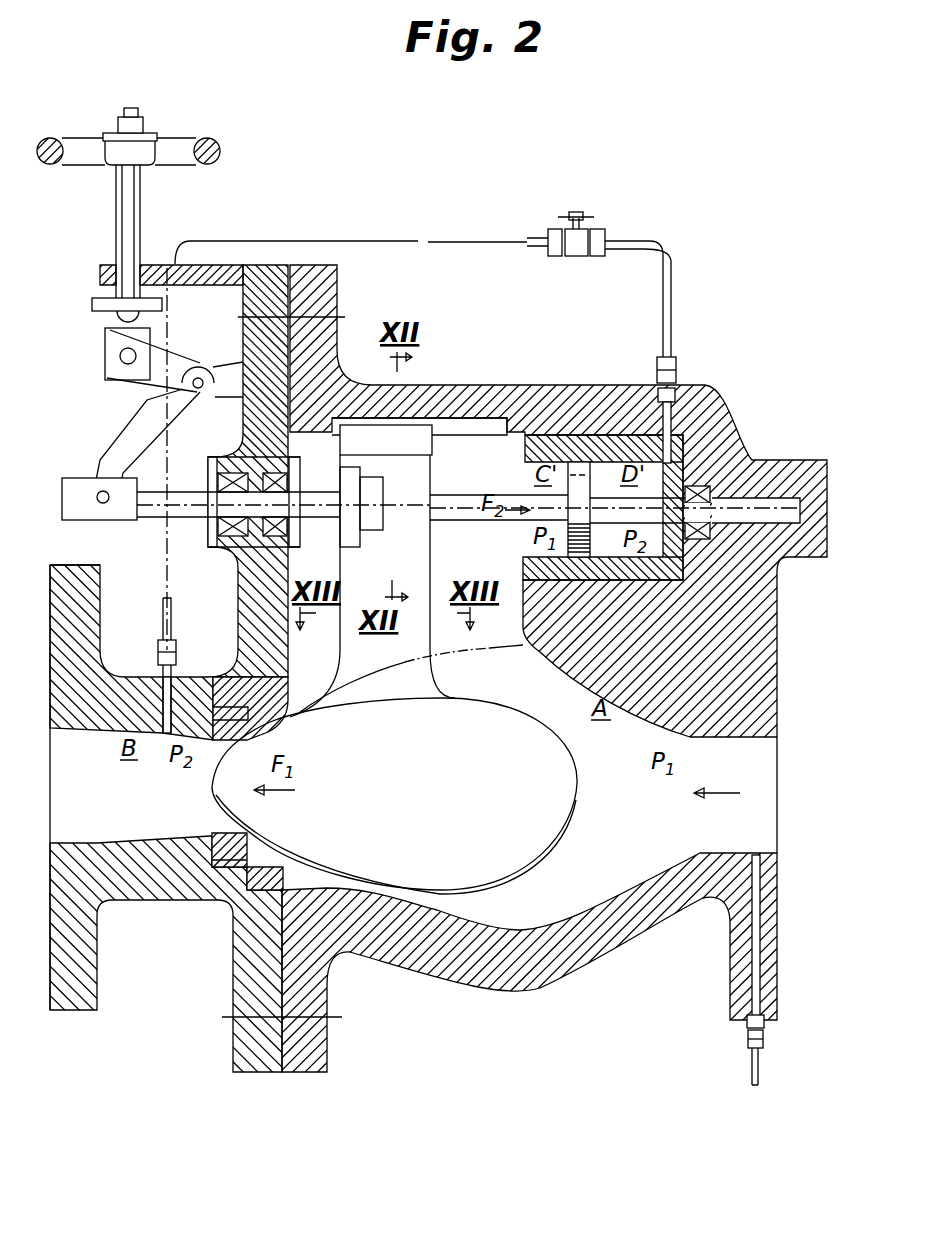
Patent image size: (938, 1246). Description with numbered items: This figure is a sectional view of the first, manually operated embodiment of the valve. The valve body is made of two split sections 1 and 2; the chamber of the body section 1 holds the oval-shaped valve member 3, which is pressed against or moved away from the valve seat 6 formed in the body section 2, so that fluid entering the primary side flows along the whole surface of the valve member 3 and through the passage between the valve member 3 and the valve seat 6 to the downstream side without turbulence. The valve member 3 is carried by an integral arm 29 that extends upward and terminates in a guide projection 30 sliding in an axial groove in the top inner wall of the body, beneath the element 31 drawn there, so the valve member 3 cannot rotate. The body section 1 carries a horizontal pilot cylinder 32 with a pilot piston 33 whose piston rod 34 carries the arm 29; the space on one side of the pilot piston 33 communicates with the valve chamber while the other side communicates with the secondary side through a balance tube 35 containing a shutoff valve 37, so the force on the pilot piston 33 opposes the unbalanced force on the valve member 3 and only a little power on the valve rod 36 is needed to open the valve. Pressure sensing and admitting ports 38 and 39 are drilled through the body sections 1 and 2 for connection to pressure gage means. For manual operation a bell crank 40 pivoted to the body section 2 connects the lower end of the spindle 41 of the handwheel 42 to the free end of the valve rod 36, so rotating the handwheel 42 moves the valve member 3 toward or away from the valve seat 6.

The valve body section 1 is at (646, 926).
The valve body section 2 is at (146, 900).
The oval-shaped valve member 3 is at (487, 861).
The valve seat 6 is at (236, 853).
The arm 29 is at (437, 539).
The guide projection 30 is at (407, 435).
The cover plate 31 is at (487, 419).
The pilot cylinder 32 is at (564, 435).
The pilot piston 33 is at (601, 453).
The piston rod 34 is at (477, 489).
The balance tube 35 is at (676, 293).
The valve rod 36 is at (154, 512).
The shutoff valve 37 is at (578, 212).
The pressure sensing and admitting port 38 is at (761, 935).
The pressure sensing and admitting port 39 is at (164, 702).
The bell crank 40 is at (130, 421).
The spindle 41 is at (122, 215).
The handwheel 42 is at (172, 143).